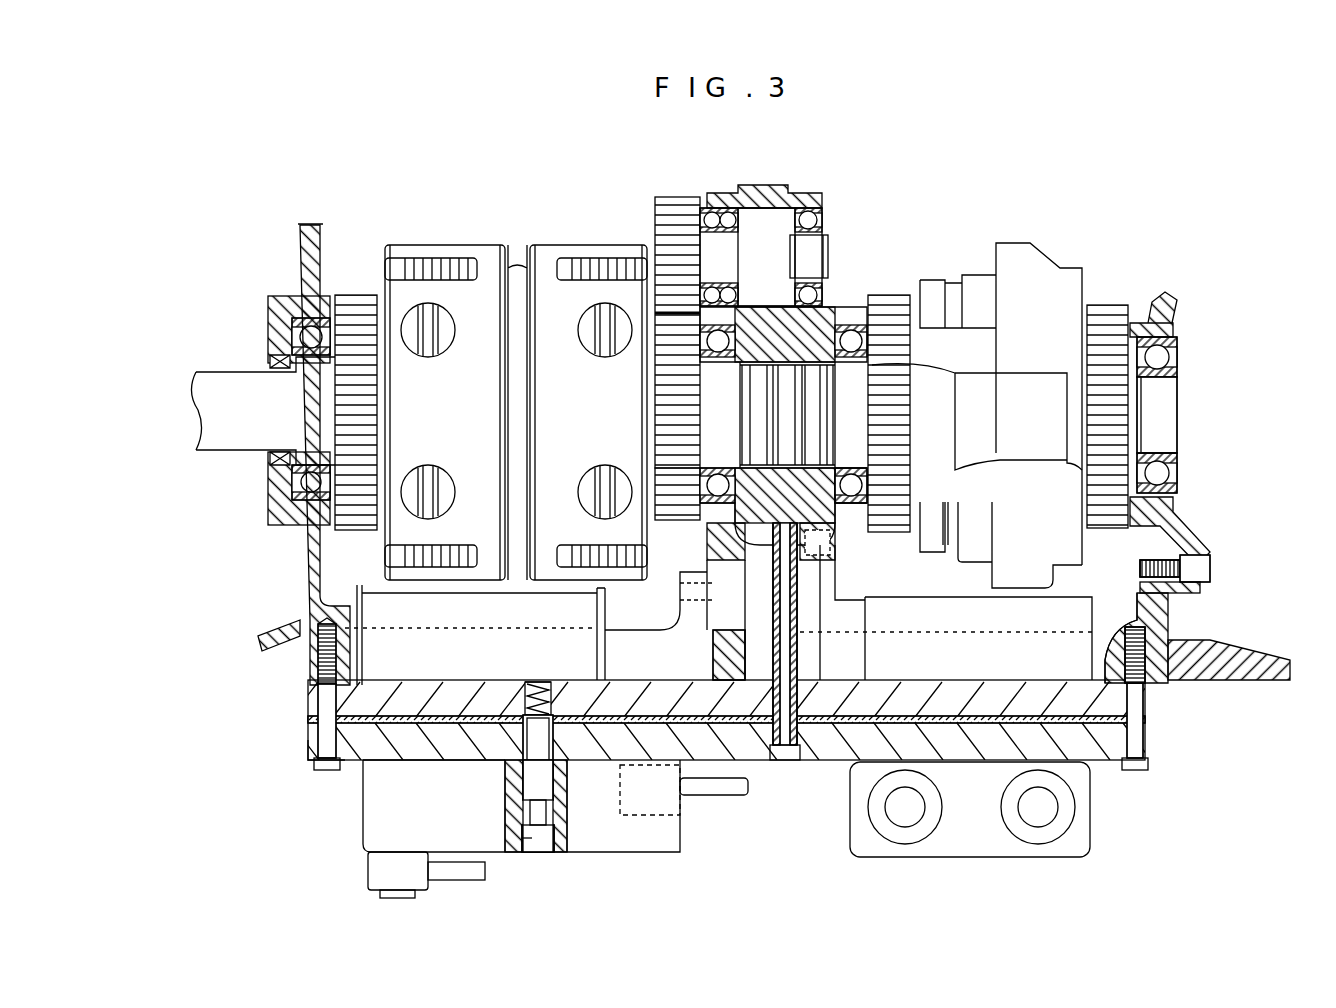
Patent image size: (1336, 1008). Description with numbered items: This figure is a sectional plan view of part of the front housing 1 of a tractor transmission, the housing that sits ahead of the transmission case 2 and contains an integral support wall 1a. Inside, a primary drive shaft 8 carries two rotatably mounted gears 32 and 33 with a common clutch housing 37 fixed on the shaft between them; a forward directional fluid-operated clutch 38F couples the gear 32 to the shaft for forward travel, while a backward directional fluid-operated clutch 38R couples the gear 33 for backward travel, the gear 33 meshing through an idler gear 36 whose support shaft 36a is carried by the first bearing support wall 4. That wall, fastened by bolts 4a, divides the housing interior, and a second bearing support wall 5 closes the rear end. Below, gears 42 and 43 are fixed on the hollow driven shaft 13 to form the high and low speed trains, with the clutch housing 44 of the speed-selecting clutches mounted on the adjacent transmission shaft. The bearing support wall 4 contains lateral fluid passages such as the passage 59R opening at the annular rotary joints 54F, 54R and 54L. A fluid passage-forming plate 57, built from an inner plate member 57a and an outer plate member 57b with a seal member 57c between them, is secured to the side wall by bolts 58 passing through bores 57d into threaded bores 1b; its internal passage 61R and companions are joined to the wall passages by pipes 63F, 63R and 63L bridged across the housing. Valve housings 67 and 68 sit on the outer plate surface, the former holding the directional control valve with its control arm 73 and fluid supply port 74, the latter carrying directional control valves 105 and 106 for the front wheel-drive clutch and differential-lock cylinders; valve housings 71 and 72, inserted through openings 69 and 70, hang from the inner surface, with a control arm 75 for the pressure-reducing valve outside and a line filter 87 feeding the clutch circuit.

The front housing 1 is at (840, 762).
The support wall 1a is at (303, 563).
The threaded bores 1b is at (328, 652).
The transmission case 2 is at (1210, 672).
The first bearing support wall 4 is at (820, 197).
The bolts 4a is at (1185, 560).
The second bearing support wall 5 is at (1158, 320).
The primary drive shaft 8 is at (232, 380).
The driven shaft 13 is at (1031, 380).
The gear 32 is at (355, 312).
The gear 33 is at (672, 500).
The idler gear 36 is at (680, 205).
The support shaft 36a is at (760, 245).
The clutch housing 37 is at (516, 282).
The forward directional fluid-operated clutch 38F is at (463, 233).
The backward directional fluid-operated clutch 38R is at (597, 233).
The gear 42 is at (1107, 310).
The gear 43 is at (900, 300).
The clutch housing 44 is at (1058, 278).
The rotary joint 54F is at (760, 363).
The rotary joint 54R is at (800, 345).
The rotary joint 54L is at (872, 365).
The fluid passage-forming plate 57 is at (1066, 668).
The inner plate member 57a is at (425, 693).
The outer plate member 57b is at (400, 740).
The seal member 57c is at (960, 717).
The bores 57d is at (318, 748).
The bolts 58 is at (325, 708).
The fluid passage 59R is at (845, 458).
The fluid passage 61R is at (784, 740).
The pipe 63F is at (750, 650).
The pipe 63R is at (803, 575).
The pipe 63L is at (840, 612).
The valve housing 67 is at (388, 820).
The valve housing 68 is at (1092, 807).
The opening 69 is at (328, 618).
The opening 70 is at (1150, 650).
The valve housing 71 is at (492, 607).
The valve housing 72 is at (1020, 610).
The control arm 73 is at (458, 865).
The fluid supply port 74 is at (540, 838).
The control arm 75 is at (708, 790).
The line filter 87 is at (540, 740).
The directional control valve 105 is at (878, 820).
The directional control valve 106 is at (1060, 825).